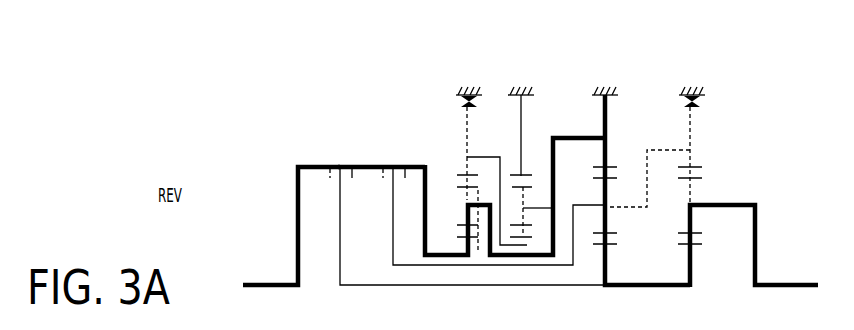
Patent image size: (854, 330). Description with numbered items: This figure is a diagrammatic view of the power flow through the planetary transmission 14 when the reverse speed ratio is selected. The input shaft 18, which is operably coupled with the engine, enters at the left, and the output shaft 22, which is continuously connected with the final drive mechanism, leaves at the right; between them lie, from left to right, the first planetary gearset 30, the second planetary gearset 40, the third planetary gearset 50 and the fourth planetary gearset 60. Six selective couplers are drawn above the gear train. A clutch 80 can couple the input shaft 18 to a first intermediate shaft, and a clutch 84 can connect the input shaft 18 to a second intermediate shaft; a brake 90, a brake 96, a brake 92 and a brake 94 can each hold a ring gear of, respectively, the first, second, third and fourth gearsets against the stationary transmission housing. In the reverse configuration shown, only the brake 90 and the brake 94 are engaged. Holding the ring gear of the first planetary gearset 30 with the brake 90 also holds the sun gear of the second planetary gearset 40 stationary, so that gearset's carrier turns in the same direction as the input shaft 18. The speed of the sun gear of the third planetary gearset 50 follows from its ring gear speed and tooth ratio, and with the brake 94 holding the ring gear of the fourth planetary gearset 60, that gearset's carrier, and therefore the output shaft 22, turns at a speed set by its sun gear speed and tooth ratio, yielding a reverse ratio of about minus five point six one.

The planetary transmission 14 is at (386, 96).
The input shaft 18 is at (262, 285).
The output shaft 22 is at (785, 285).
The first planetary gearset 30 is at (492, 132).
The second planetary gearset 40 is at (548, 132).
The third planetary gearset 50 is at (628, 130).
The fourth planetary gearset 60 is at (718, 130).
The clutch 80 is at (338, 161).
The clutch 84 is at (394, 161).
The brake 90 is at (472, 76).
The brake 92 is at (612, 76).
The brake 94 is at (702, 76).
The brake 96 is at (527, 76).